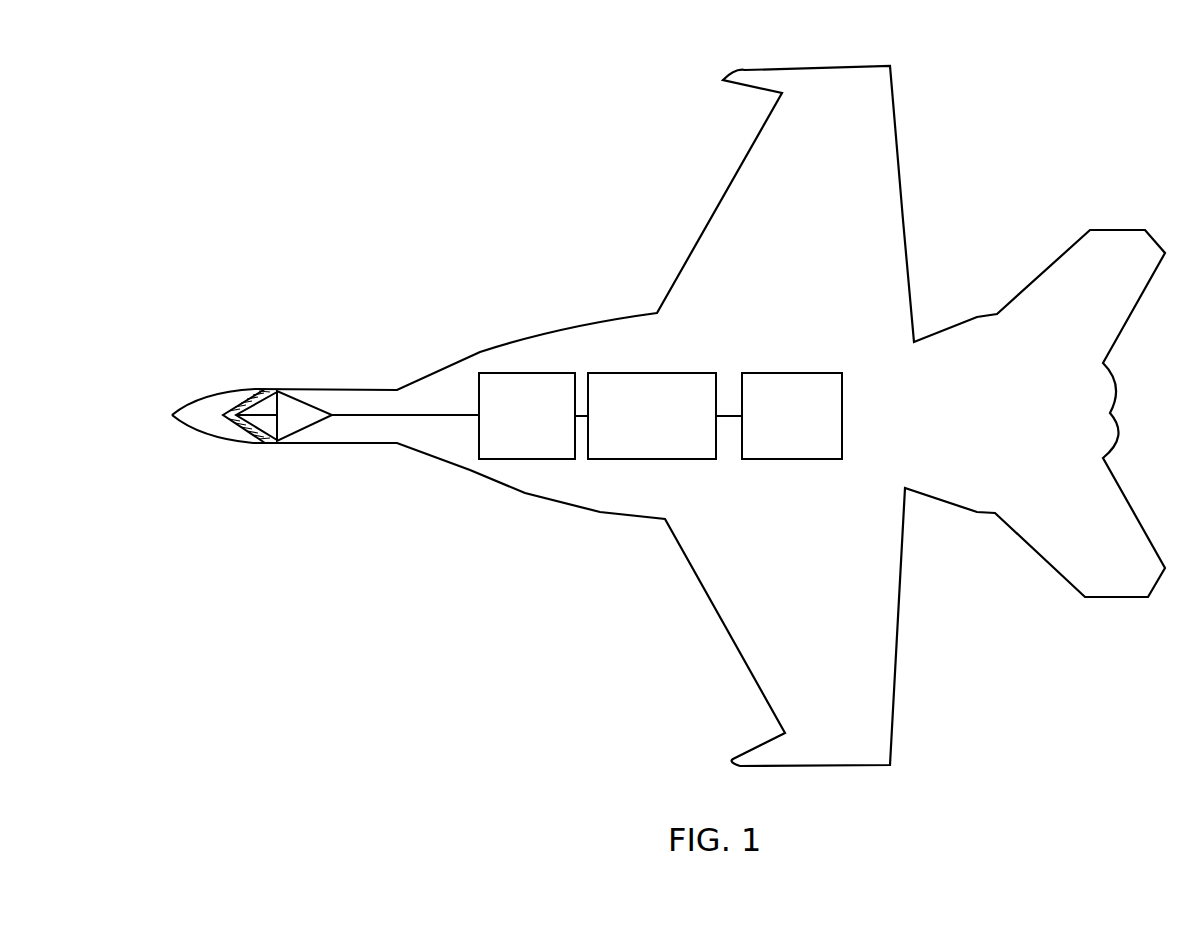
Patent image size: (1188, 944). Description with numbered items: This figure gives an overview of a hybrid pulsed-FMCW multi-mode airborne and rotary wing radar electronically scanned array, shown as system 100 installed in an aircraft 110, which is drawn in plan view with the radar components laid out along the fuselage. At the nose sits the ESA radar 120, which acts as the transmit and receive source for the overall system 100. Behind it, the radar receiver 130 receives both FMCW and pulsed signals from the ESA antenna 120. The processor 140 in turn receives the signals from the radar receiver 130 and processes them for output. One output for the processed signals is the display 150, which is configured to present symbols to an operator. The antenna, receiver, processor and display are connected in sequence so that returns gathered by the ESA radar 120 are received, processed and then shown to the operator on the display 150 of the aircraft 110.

The system 100 is at (200, 143).
The aircraft 110 is at (606, 508).
The ESA radar 120 is at (254, 391).
The radar receiver 130 is at (543, 373).
The processor 140 is at (651, 373).
The display 150 is at (786, 373).